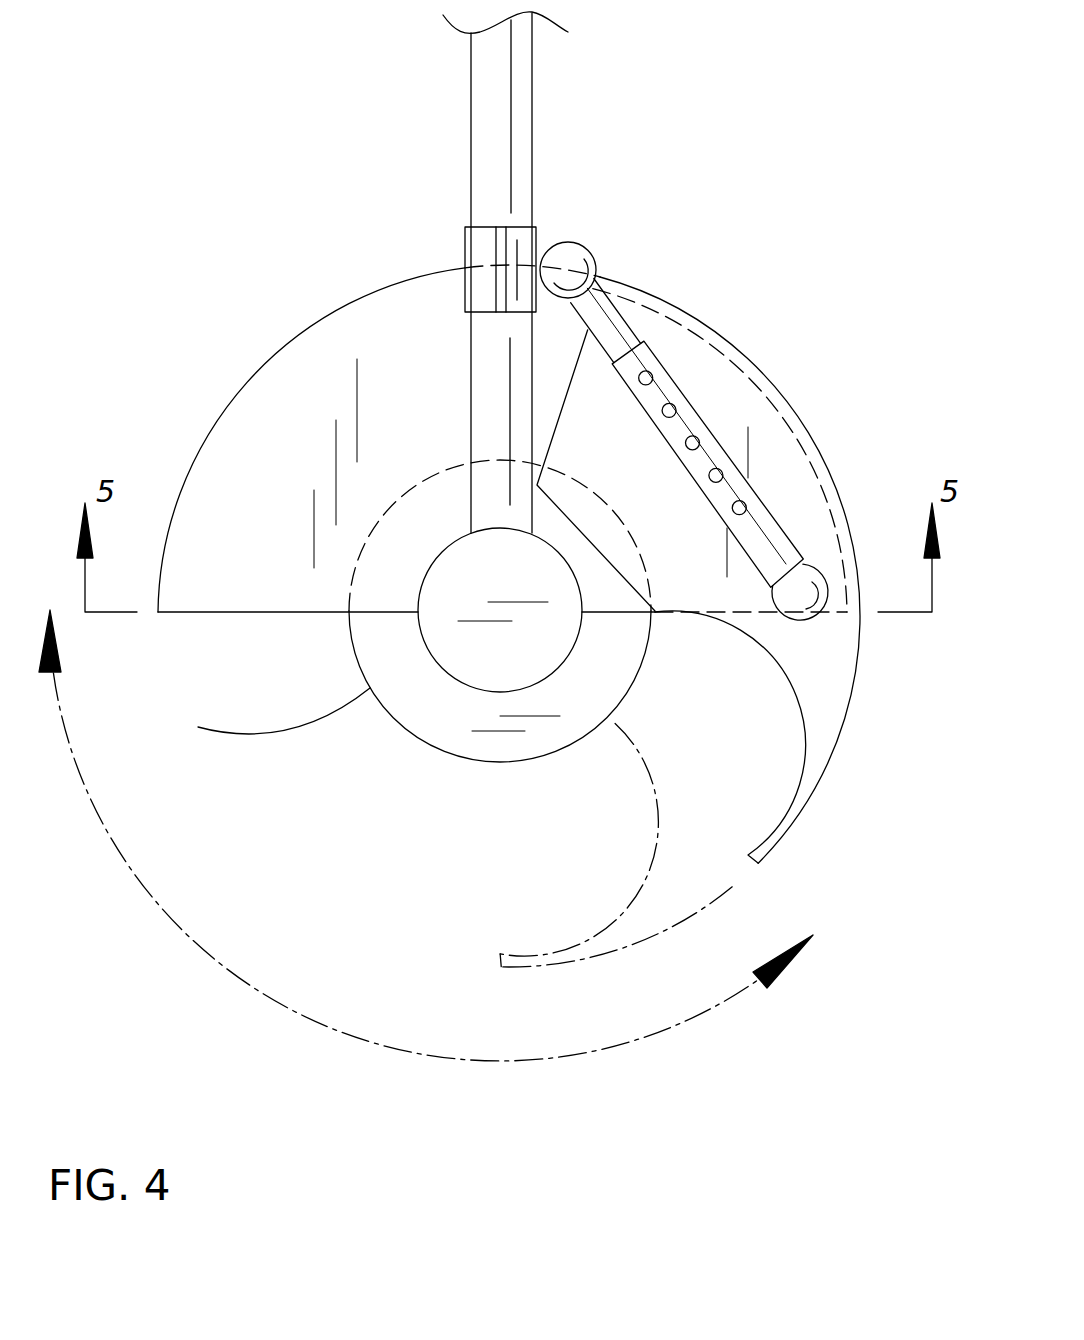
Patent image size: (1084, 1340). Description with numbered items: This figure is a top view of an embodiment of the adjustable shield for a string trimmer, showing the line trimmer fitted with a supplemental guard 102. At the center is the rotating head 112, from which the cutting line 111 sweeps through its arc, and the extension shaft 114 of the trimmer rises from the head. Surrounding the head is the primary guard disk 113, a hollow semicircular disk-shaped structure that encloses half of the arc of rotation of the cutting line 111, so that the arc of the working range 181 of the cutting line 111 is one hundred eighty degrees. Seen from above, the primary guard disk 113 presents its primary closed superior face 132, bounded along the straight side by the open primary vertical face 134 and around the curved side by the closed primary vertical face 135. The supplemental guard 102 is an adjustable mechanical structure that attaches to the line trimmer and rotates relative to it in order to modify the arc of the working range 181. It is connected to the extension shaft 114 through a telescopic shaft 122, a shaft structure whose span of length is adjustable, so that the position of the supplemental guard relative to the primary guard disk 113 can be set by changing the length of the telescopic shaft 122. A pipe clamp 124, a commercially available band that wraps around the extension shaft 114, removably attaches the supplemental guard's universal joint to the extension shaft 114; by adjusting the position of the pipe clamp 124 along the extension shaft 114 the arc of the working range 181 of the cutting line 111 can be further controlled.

The supplemental guard 102 is at (817, 710).
The cutting line 111 is at (265, 733).
The rotating head 112 is at (477, 645).
The primary guard disk 113 is at (198, 452).
The extension shaft 114 is at (520, 132).
The telescopic shaft 122 is at (695, 417).
The pipe clamp 124 is at (535, 238).
The primary closed superior face 132 is at (288, 407).
The open primary vertical face 134 is at (282, 612).
The closed primary vertical face 135 is at (347, 303).
The working range 181 is at (272, 1000).